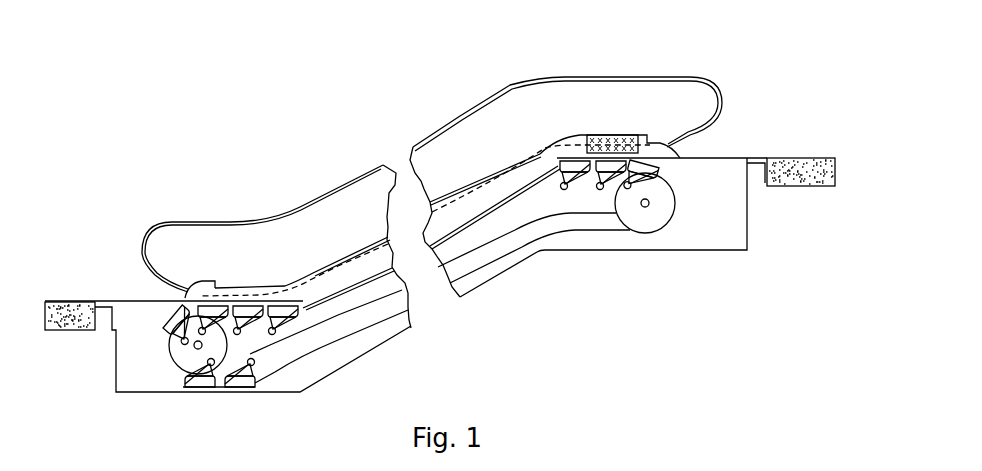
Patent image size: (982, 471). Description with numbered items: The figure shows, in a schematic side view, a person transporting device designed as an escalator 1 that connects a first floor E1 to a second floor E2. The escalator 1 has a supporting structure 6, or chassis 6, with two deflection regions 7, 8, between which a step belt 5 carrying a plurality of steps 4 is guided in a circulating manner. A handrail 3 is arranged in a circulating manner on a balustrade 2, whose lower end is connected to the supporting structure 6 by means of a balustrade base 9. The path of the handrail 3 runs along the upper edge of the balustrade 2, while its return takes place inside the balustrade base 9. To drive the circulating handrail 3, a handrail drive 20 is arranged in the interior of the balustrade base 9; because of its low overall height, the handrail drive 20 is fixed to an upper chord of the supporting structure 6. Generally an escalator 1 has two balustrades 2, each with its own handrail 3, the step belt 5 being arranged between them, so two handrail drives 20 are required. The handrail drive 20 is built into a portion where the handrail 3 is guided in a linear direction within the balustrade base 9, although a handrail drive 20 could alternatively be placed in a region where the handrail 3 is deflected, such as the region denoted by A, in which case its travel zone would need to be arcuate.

The escalator 1 is at (323, 158).
The balustrade 2 is at (642, 97).
The handrail 3 is at (516, 84).
The step 4 is at (282, 305).
The step belt 5 is at (541, 167).
The supporting structure 6 is at (707, 238).
The deflection region 7 is at (214, 353).
The deflection region 8 is at (632, 214).
The balustrade base 9 is at (213, 290).
The handrail drive 20 is at (632, 136).
The region of handrail deflection A is at (546, 138).
The first floor E1 is at (70, 300).
The second floor E2 is at (791, 153).